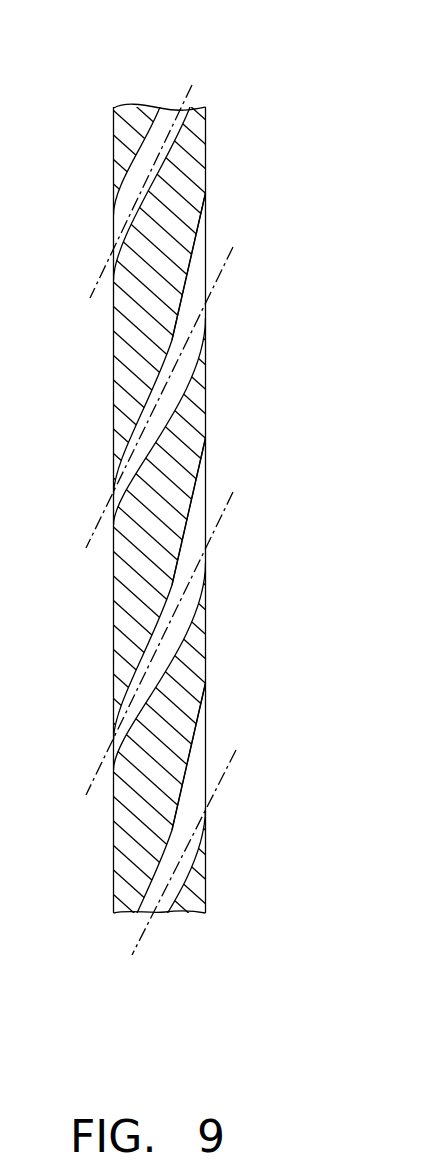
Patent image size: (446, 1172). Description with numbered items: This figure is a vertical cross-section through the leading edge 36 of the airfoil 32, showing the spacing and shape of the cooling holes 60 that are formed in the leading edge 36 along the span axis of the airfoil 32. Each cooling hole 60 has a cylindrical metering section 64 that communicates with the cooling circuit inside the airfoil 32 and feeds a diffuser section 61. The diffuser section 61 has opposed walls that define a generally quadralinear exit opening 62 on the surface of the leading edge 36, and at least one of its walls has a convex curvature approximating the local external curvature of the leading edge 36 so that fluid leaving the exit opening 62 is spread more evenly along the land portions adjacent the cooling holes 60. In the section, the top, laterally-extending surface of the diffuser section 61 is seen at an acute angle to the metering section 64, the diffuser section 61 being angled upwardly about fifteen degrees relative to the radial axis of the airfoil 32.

The airfoil 32 is at (125, 92).
The leading edge 36 is at (198, 168).
The cooling holes 60 is at (180, 93).
The diffuser section 61 is at (193, 264).
The exit opening 62 is at (206, 196).
The metering section 64 is at (133, 186).